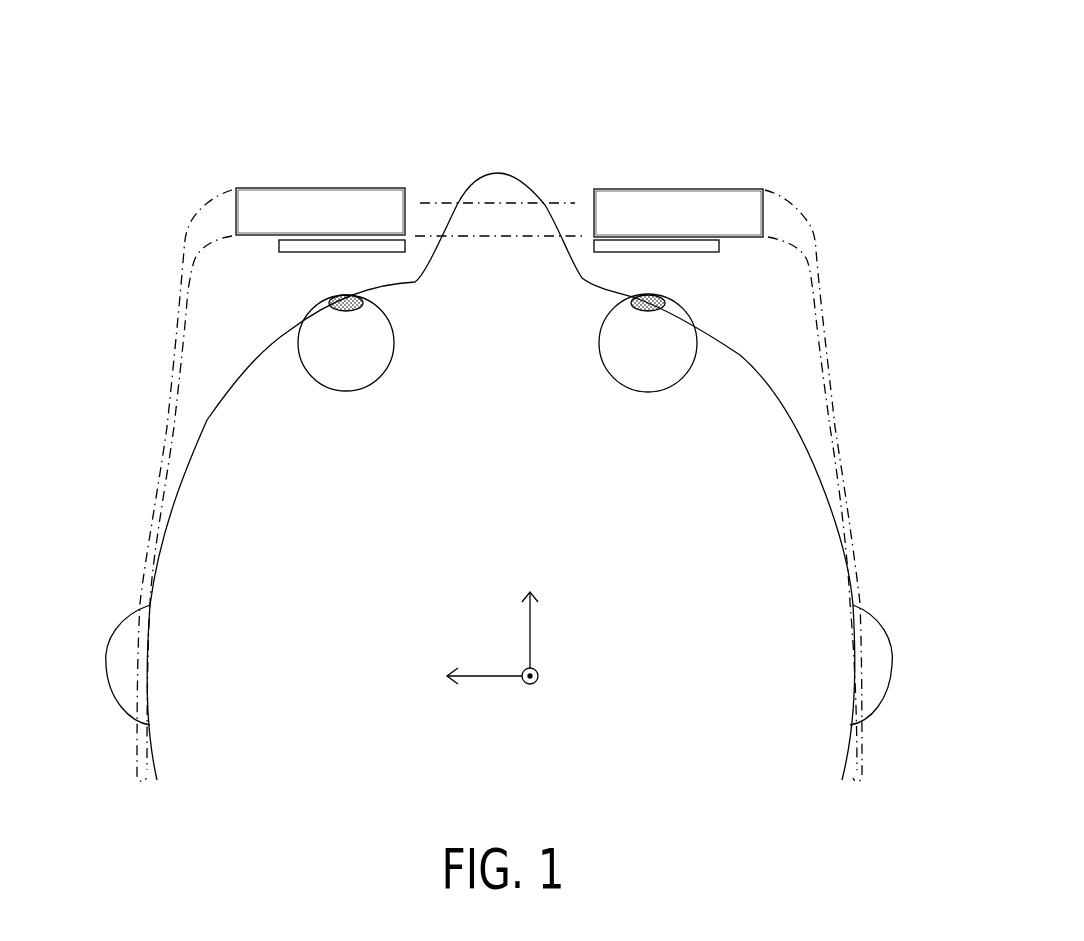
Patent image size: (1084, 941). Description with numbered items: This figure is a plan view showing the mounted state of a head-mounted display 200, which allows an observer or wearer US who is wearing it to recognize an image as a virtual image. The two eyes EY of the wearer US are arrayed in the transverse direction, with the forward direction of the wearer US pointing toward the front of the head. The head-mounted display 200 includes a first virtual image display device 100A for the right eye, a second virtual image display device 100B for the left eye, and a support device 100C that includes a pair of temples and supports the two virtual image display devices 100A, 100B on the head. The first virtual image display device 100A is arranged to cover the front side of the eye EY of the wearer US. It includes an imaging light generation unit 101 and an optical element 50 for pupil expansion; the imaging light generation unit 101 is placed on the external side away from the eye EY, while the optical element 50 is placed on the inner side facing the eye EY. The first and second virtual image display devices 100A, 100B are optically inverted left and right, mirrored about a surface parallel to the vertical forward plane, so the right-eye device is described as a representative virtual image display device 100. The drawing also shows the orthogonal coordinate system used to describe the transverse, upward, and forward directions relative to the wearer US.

The head-mounted display 200 is at (857, 38).
The virtual image display device 100 is at (541, 157).
The first virtual image display device 100A is at (708, 162).
The second virtual image display device 100B is at (290, 160).
The support device 100C is at (155, 405).
The imaging light generation unit 101 is at (331, 208).
The optical element 50 is at (376, 245).
The wearer US is at (263, 370).
The eye EY is at (348, 373).